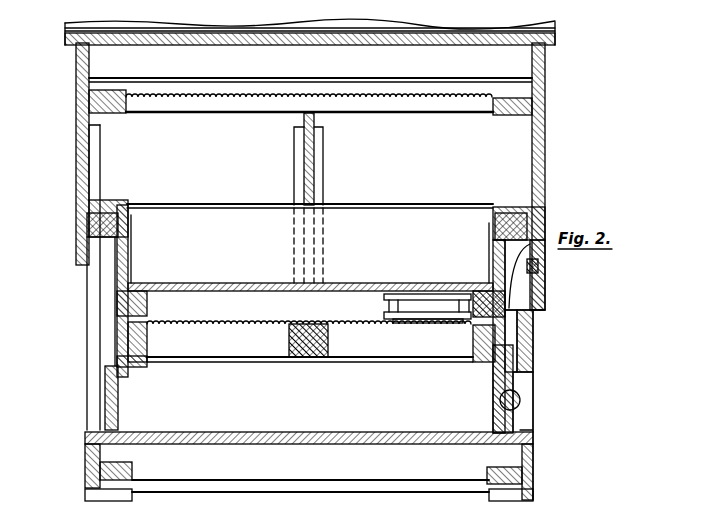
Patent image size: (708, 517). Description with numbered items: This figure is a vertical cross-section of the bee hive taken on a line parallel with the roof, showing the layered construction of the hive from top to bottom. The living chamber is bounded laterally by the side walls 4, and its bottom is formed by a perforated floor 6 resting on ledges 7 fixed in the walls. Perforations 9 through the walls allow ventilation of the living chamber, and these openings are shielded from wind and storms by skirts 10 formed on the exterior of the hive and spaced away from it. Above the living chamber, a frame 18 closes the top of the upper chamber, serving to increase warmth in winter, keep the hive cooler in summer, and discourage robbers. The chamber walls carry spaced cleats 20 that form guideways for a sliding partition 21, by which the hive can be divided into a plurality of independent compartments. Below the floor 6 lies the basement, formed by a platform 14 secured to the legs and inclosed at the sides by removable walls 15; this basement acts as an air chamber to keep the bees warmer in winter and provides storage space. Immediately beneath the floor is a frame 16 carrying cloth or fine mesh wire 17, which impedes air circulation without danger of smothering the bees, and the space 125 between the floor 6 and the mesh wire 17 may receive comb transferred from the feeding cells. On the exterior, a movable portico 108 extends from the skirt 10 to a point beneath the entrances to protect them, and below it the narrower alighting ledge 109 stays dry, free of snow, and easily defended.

The side wall 4 is at (59, 180).
The perforated floor 6 is at (238, 284).
The ledge 7 is at (148, 299).
The perforation 9 is at (129, 246).
The skirt 10 is at (77, 246).
The platform 14 is at (333, 445).
The removable wall 15 is at (119, 402).
The frame 16 is at (148, 336).
The cloth or fine mesh wire 17 is at (270, 322).
The frame 18 is at (118, 113).
The cleat 20 is at (492, 223).
The sliding partition 21 is at (304, 160).
The movable portico 108 is at (546, 300).
The alighting ledge 109 is at (521, 330).
The space between floor and mesh wire 125 is at (436, 323).